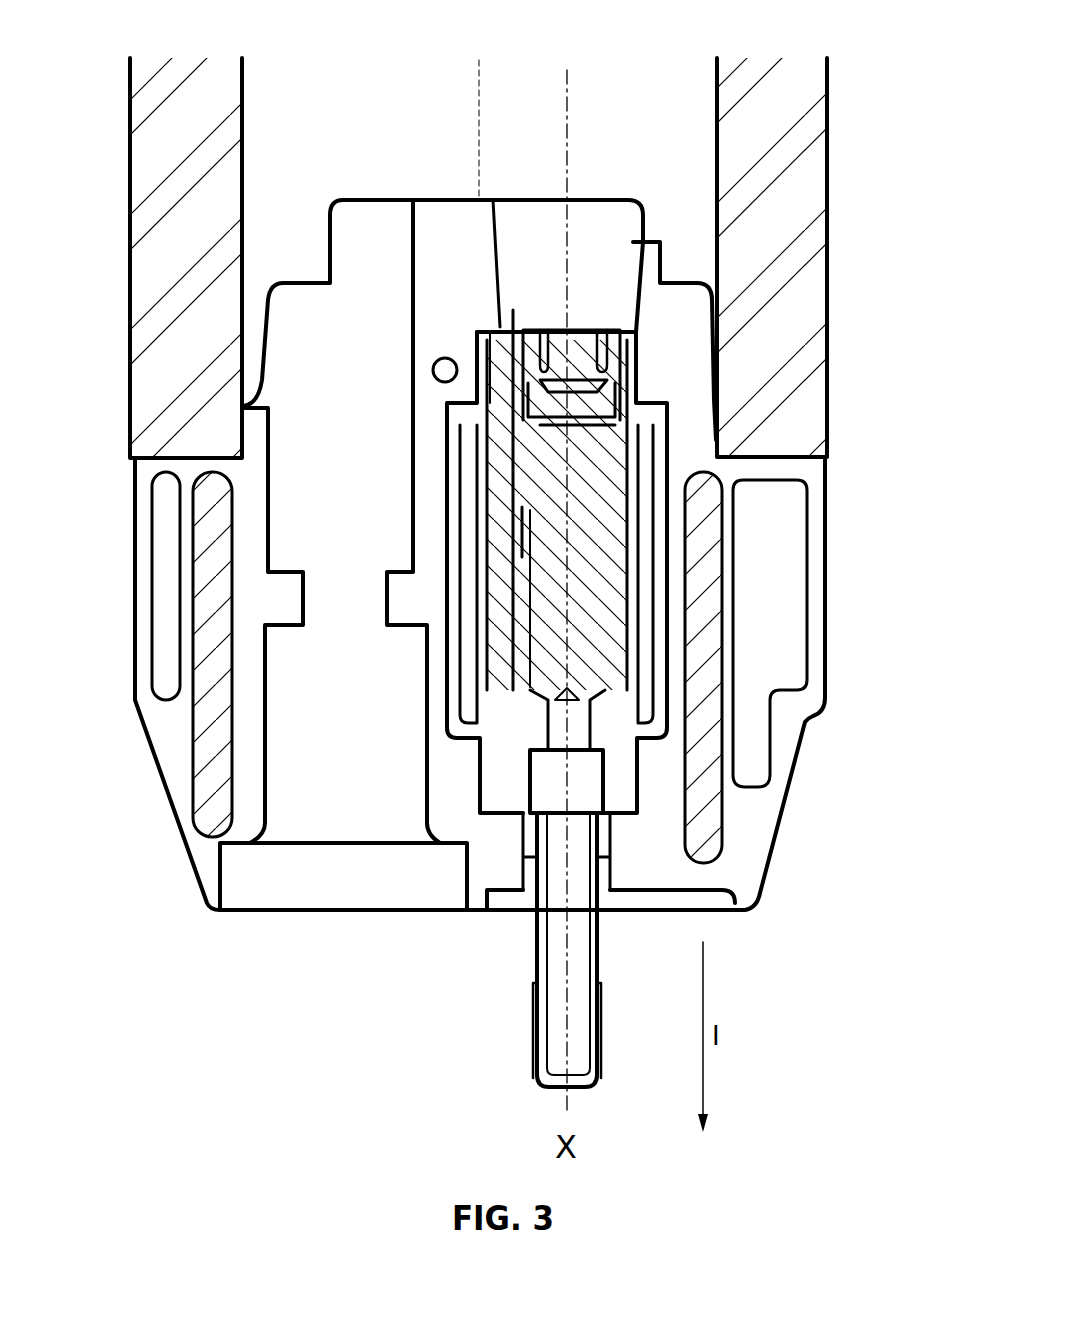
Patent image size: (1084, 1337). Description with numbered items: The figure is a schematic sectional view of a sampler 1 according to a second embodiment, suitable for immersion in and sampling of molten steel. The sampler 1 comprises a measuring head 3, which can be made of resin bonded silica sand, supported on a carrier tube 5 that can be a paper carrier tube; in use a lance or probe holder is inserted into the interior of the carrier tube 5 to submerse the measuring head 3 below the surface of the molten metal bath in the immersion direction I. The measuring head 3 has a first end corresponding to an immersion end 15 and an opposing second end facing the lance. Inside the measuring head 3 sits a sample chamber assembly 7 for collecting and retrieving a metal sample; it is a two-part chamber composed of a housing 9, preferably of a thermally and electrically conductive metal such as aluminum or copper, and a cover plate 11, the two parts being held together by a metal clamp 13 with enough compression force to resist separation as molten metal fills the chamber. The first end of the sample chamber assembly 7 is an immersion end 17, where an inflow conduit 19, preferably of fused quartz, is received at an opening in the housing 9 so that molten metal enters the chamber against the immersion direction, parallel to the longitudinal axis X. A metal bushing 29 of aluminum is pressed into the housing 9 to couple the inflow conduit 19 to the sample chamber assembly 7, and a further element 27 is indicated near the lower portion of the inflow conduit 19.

The sampler 1 is at (618, 115).
The measuring head 3 is at (703, 330).
The carrier tube 5 is at (242, 177).
The sample chamber assembly 7 is at (628, 500).
The housing 9 is at (547, 457).
The cover plate 11 is at (527, 497).
The clamp 13 is at (477, 628).
The immersion end 15 is at (737, 900).
The immersion end 17 is at (545, 812).
The inflow conduit 19 is at (535, 978).
The threaded portion 27 is at (535, 1053).
The metal bushing 29 is at (547, 770).